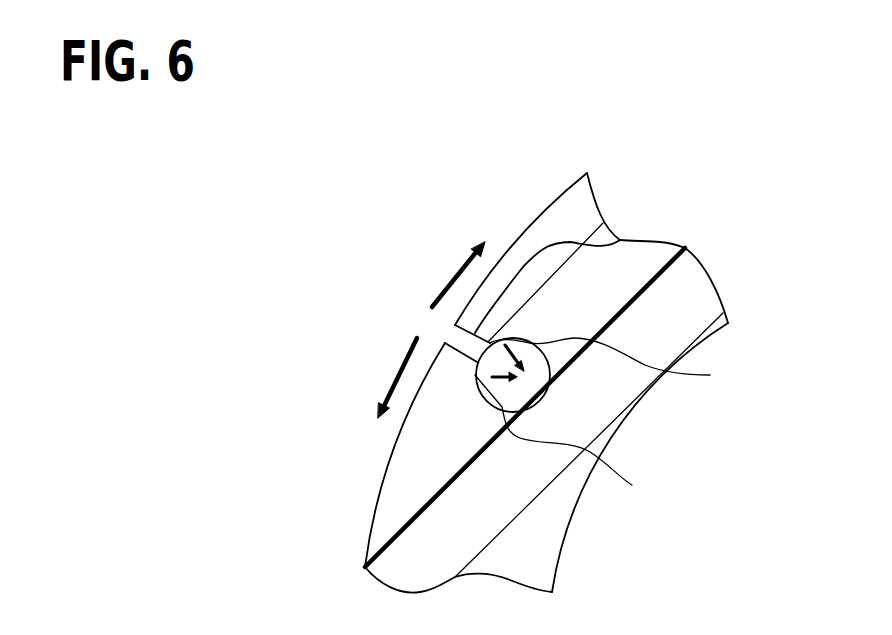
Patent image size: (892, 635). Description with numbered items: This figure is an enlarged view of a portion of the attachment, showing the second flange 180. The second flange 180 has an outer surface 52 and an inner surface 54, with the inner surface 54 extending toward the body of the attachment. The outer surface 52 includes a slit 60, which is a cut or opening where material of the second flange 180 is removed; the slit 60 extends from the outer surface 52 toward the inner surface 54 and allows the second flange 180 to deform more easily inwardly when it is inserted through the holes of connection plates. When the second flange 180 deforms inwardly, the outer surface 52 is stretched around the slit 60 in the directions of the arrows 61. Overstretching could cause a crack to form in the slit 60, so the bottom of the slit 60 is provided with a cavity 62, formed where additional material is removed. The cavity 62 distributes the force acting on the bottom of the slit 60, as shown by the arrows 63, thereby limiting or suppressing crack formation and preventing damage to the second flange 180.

The second flange 180 is at (452, 169).
The outer surface 52 is at (374, 530).
The inner surface 54 is at (570, 533).
The slit 60 is at (620, 240).
The arrows 61 is at (450, 278).
The cavity 62 is at (549, 366).
The arrows 63 is at (608, 420).